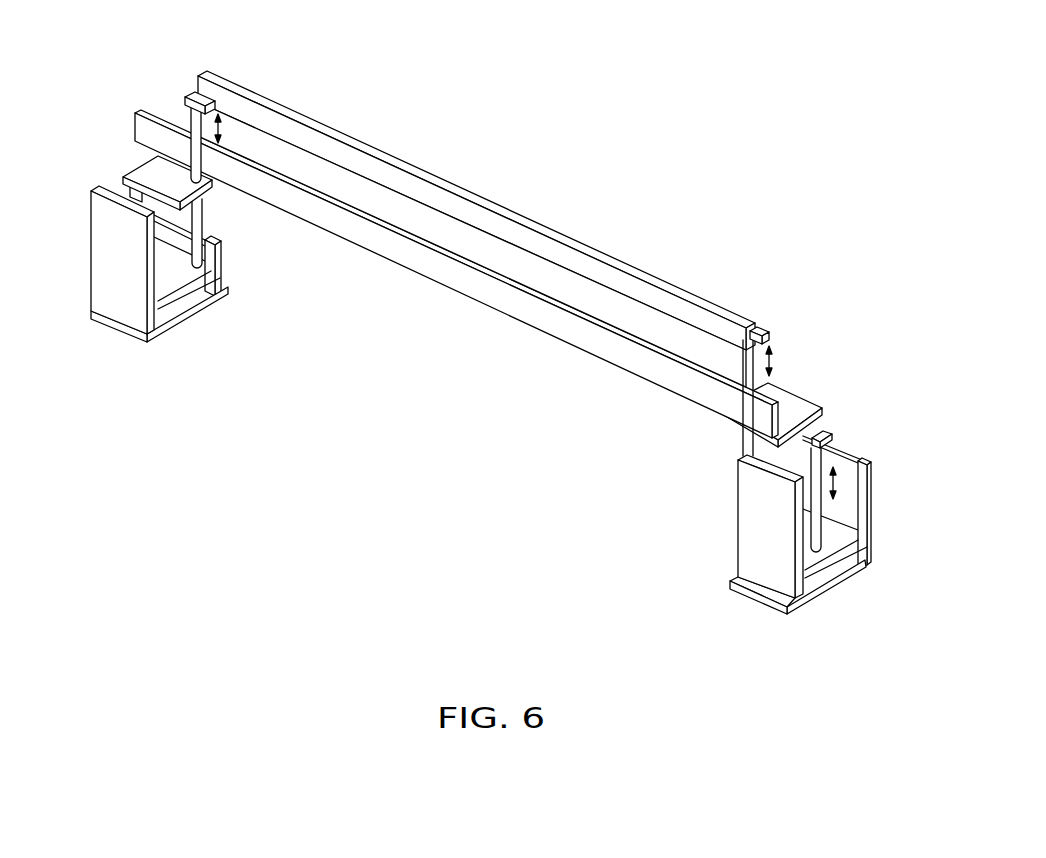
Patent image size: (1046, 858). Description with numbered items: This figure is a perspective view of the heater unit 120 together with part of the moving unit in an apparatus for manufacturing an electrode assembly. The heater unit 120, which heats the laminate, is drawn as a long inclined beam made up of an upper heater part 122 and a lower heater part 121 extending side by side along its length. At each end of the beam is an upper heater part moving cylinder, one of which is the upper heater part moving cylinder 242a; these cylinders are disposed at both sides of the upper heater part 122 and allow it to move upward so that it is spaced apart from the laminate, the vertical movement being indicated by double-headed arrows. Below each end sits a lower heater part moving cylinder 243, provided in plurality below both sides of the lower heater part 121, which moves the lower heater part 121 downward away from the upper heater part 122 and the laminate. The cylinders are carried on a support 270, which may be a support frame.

The heater unit 120 is at (456, 254).
The lower heater part 121 is at (655, 370).
The upper heater part 122 is at (688, 143).
The upper heater part moving cylinder 242a is at (198, 148).
The lower heater part moving cylinder 243 is at (128, 194).
The support 270 is at (868, 513).